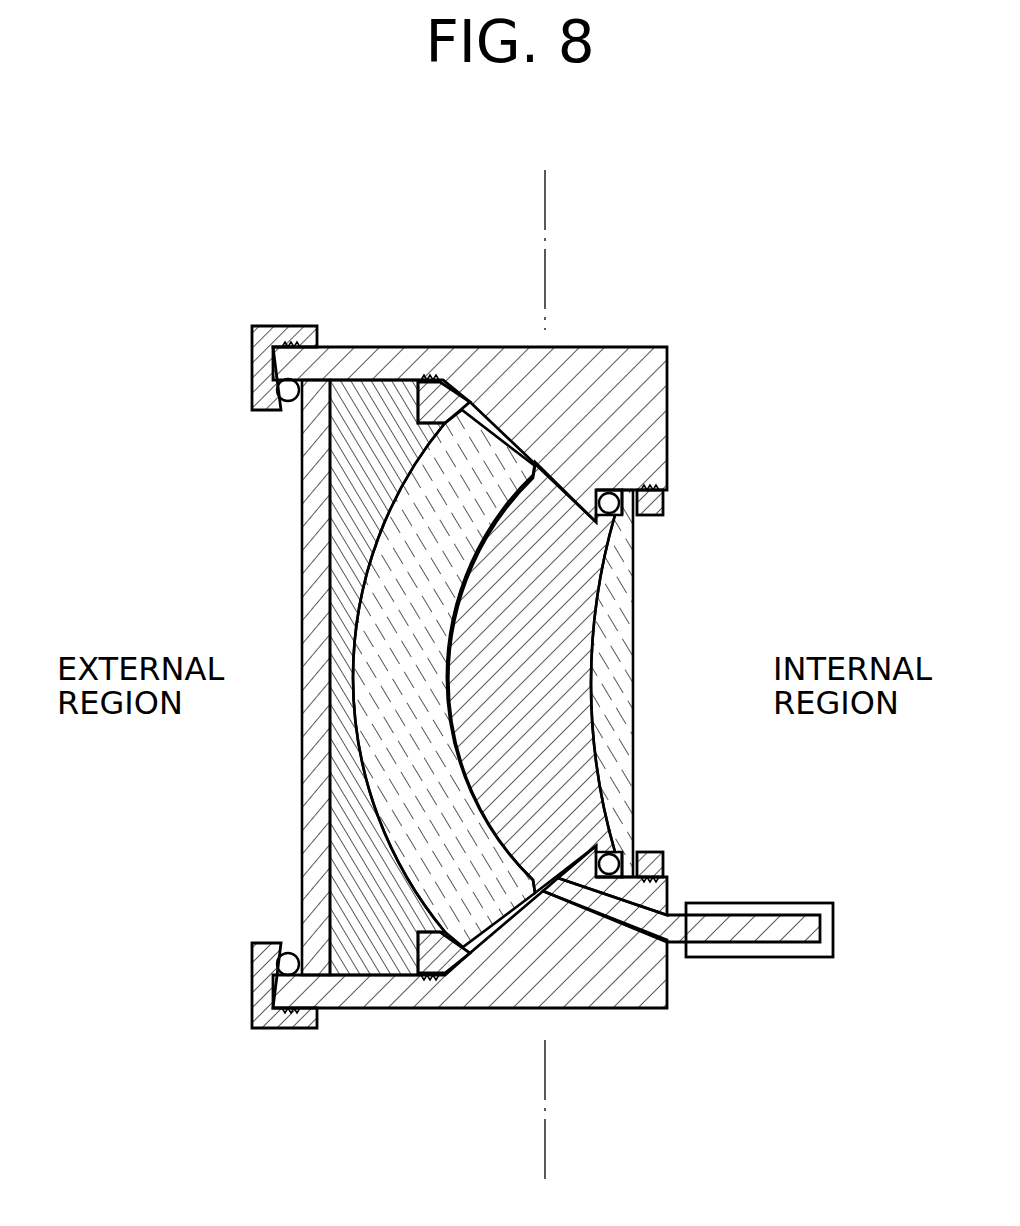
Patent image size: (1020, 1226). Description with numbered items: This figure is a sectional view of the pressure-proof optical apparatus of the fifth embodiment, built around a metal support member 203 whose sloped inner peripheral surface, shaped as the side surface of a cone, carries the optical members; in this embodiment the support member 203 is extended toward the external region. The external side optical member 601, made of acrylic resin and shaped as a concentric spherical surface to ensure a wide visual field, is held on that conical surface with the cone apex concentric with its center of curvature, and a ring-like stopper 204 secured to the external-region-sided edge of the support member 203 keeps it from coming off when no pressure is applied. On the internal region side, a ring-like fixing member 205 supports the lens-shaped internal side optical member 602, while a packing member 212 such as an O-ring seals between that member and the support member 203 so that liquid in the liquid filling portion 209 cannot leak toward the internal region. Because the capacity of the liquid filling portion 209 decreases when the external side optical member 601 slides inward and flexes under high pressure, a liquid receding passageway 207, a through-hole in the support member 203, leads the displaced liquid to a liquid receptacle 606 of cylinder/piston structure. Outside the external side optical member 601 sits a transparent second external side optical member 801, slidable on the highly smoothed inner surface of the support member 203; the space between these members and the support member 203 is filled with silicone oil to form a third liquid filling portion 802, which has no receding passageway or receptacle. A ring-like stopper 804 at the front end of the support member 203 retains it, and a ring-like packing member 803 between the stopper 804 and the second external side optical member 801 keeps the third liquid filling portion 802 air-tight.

The support member 203 is at (655, 433).
The ring-like stopper 204 is at (417, 402).
The ring-like fixing member 205 is at (660, 502).
The liquid receding passageway 207 is at (548, 910).
The liquid filling portion 209 is at (570, 703).
The packing member 212 is at (611, 490).
The external side optical member 601 is at (383, 770).
The internal side optical member 602 is at (620, 550).
The liquid receptacle 606 is at (728, 948).
The second external side optical member 801 is at (300, 530).
The third liquid filling portion 802 is at (332, 597).
The ring-like packing member 803 is at (284, 404).
The ring-like stopper 804 is at (258, 392).